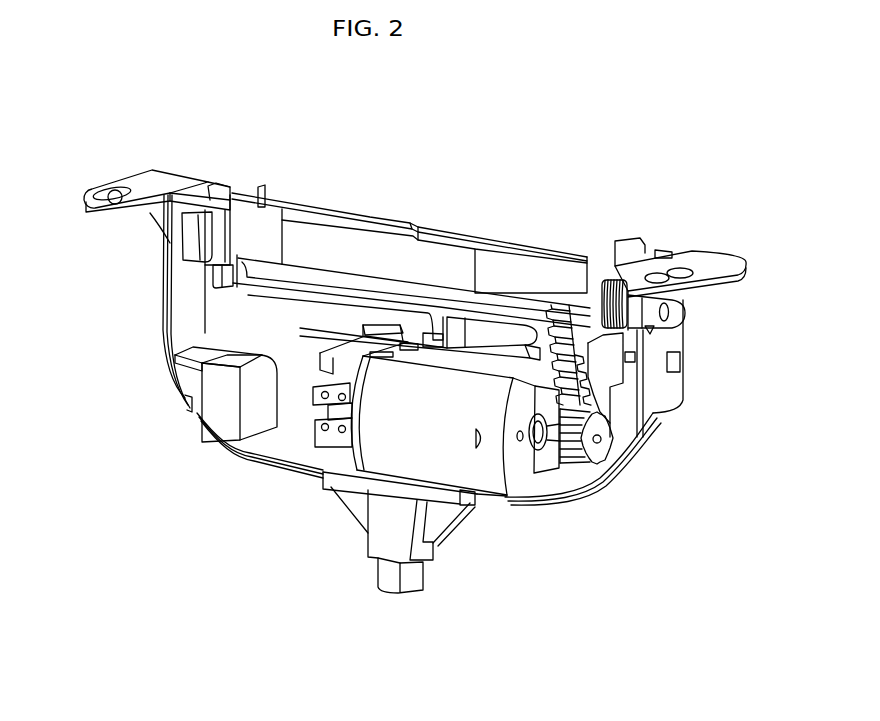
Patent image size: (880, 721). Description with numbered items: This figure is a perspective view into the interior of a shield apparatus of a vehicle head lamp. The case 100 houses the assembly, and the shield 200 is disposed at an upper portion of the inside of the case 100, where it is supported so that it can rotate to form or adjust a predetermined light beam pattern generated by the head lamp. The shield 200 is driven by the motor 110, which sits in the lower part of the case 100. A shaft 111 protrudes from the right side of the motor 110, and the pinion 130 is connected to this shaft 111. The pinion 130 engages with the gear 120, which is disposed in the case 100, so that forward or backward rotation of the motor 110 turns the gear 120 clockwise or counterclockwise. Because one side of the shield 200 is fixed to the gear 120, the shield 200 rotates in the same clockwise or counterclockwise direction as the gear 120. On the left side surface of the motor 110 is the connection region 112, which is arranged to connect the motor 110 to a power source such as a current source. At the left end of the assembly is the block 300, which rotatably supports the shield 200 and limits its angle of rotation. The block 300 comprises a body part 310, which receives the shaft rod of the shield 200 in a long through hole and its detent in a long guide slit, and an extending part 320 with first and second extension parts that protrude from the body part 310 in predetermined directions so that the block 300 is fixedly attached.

The case 100 is at (237, 315).
The motor 110 is at (408, 453).
The shaft 111 is at (552, 432).
The connection region 112 is at (325, 443).
The gear 120 is at (588, 340).
The pinion 130 is at (610, 425).
The shield 200 is at (515, 268).
The block 300 is at (147, 224).
The body part 310 is at (218, 230).
The extending part 320 is at (180, 261).